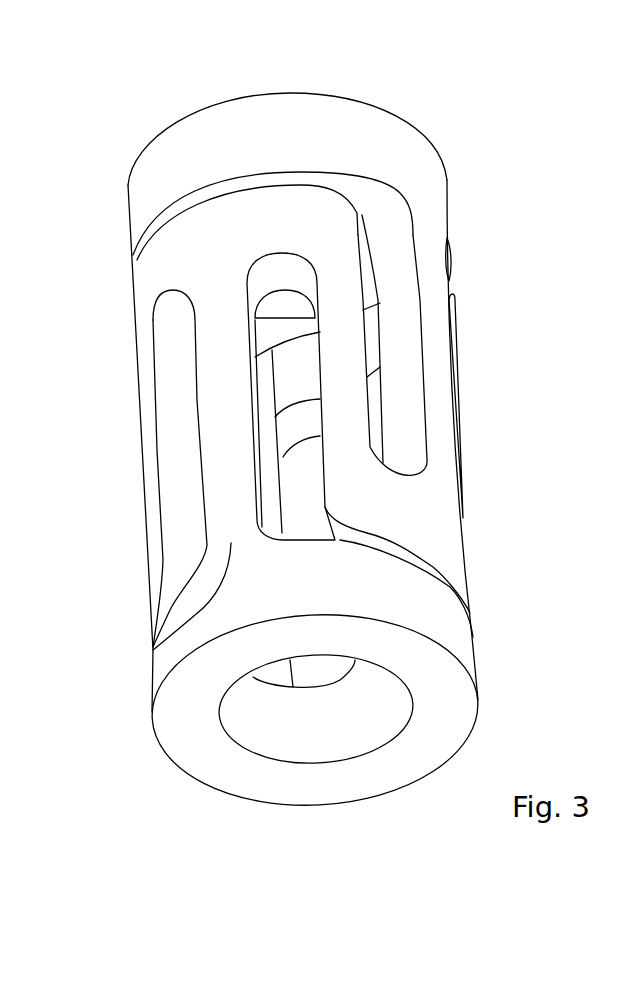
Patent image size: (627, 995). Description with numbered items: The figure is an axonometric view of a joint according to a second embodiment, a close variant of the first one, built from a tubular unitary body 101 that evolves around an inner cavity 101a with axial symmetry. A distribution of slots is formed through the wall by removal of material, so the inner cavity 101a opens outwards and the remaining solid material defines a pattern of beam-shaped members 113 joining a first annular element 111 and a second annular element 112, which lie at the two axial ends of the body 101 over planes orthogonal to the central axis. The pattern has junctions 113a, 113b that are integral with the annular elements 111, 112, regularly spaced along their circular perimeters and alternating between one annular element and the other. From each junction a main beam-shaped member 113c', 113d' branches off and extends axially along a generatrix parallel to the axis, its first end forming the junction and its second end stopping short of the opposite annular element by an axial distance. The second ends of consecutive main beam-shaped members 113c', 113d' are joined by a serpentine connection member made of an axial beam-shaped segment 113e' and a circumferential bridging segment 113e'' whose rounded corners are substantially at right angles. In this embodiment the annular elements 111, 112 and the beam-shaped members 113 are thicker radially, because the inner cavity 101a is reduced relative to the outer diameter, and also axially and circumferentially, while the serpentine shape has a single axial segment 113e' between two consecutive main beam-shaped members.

The unitary body 101 is at (452, 192).
The inner cavity 101a is at (367, 722).
The first annular element 111 is at (427, 600).
The second annular element 112 is at (310, 133).
The beam-shaped members 113 is at (362, 209).
The junction 113a is at (148, 560).
The junction 113b is at (428, 217).
The main beam-shaped member 113c' is at (135, 265).
The main beam-shaped member 113d' is at (493, 406).
The axial beam-shaped segment 113e' is at (445, 436).
The circumferential bridging segment 113e'' is at (256, 299).